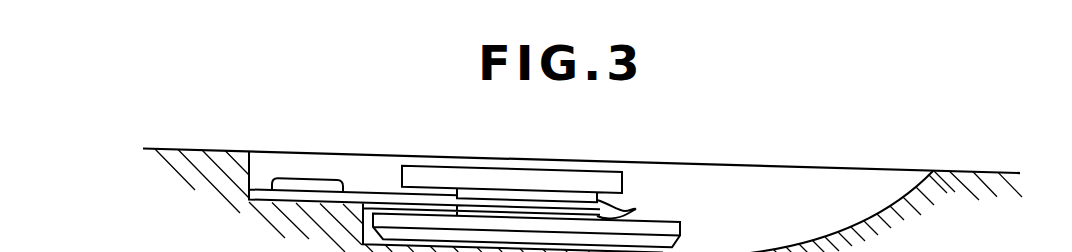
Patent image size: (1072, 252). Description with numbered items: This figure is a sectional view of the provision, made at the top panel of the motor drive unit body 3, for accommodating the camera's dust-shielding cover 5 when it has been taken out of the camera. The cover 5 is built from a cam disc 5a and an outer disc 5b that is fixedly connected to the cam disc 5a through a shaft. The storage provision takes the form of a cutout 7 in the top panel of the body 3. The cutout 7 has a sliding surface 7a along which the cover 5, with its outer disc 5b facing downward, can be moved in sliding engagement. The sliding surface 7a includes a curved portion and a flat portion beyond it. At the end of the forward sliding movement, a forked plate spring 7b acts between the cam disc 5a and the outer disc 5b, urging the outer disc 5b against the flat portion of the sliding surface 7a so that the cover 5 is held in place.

The body 3 is at (582, 165).
The dust-shielding cover 5 is at (539, 160).
The cam disc 5a is at (437, 152).
The outer disc 5b is at (547, 230).
The cutout 7 is at (465, 186).
The sliding surface 7a is at (848, 211).
The forked plate spring 7b is at (644, 199).